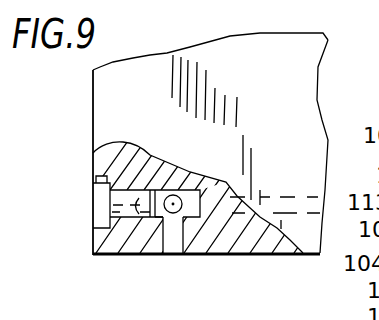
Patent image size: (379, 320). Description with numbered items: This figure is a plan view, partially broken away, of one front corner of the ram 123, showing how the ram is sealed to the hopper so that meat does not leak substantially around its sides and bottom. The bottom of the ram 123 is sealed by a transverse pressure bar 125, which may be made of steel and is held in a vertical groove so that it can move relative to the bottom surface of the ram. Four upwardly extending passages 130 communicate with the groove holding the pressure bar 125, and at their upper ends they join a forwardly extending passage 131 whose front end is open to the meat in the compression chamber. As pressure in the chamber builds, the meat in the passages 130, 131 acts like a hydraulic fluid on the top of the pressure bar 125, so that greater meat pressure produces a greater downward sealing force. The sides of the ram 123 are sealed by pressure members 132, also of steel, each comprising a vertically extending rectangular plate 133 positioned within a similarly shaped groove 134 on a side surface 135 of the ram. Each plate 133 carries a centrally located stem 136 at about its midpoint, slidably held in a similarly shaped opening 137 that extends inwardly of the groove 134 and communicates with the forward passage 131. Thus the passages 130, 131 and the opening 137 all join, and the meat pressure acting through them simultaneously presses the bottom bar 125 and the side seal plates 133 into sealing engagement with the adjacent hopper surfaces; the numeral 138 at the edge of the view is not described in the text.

The ram 123 is at (293, 77).
The transverse pressure bar 125 is at (157, 254).
The upwardly extending passage 130 is at (178, 190).
The forwardly extending passage 131 is at (175, 258).
The pressure member 132 is at (88, 232).
The vertically extending rectangular plate 133 is at (92, 190).
The groove 134 is at (100, 174).
The side surface 135 is at (93, 118).
The stem 136 is at (117, 255).
The opening 137 is at (158, 165).
The end wall 138 is at (307, 129).